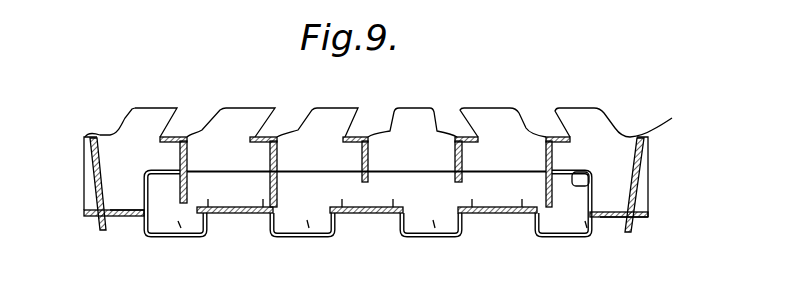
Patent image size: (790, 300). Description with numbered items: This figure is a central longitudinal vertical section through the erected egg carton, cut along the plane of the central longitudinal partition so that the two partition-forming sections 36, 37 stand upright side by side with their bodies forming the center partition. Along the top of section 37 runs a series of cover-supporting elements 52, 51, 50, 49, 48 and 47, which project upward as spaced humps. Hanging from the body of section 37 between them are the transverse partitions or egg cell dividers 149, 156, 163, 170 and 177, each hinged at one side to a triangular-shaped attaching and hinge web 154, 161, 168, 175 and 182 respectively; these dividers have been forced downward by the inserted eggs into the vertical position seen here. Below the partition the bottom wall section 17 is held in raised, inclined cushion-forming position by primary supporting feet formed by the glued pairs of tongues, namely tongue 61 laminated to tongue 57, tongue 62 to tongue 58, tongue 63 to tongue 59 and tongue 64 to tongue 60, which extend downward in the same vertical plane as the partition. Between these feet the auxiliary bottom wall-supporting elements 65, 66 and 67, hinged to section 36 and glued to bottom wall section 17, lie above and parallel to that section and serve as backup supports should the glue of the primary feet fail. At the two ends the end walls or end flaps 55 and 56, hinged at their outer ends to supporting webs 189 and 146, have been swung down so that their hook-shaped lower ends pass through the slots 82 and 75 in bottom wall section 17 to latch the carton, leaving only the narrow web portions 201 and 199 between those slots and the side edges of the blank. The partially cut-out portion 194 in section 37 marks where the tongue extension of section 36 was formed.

The bottom wall section 17 is at (246, 214).
The center partition-forming, transverse partition-forming and end flap-forming sect 36 is at (162, 183).
The center partition-forming, transverse partition-forming and end flap-forming sect 37 is at (113, 143).
The cover-supporting element 47 is at (578, 117).
The cover-supporting element 48 is at (490, 115).
The cover-supporting element 49 is at (413, 117).
The cover-supporting element 50 is at (333, 113).
The cover-supporting element 51 is at (248, 108).
The cover-supporting element 52 is at (147, 118).
The end wall or end flap 55 is at (648, 173).
The end wall or end flap 56 is at (93, 175).
The tongue or bottom wall-supporting element 57 is at (537, 237).
The tongue or bottom wall-supporting element 58 is at (402, 237).
The tongue or bottom wall-supporting element 59 is at (272, 237).
The tongue or bottom wall-supporting element 60 is at (146, 236).
The tongue or bottom wall-supporting element 61 is at (585, 228).
The tongue or bottom wall-supporting element 62 is at (434, 222).
The tongue or bottom wall-supporting element 63 is at (308, 222).
The tongue or bottom wall-supporting element 64 is at (180, 227).
The auxiliary bottom wall-supporting element 65 is at (495, 207).
The auxiliary bottom wall-supporting element 66 is at (372, 207).
The auxiliary bottom wall-supporting element 67 is at (235, 207).
The slot or opening 75 is at (117, 220).
The slot or opening 82 is at (618, 218).
The hinged supporting web 146 is at (85, 135).
The transverse partition or egg cell divider 149 is at (188, 160).
The triangular-shaped attaching and hinge web 154 is at (181, 137).
The transverse partition or egg cell divider 156 is at (278, 160).
The triangular-shaped attaching and hinge web 161 is at (272, 137).
The transverse partition or egg cell divider 163 is at (370, 160).
The triangular-shaped attaching and hinge web 168 is at (358, 137).
The transverse partition or egg cell divider 170 is at (463, 160).
The triangular-shaped attaching and hinge web 175 is at (457, 132).
The transverse partition or egg cell divider 177 is at (553, 163).
The triangular-shaped attaching and hinge web 182 is at (541, 137).
The hinged supporting web 189 is at (678, 112).
The partially cut-out portion 194 is at (586, 183).
The web portion 199 is at (92, 216).
The web portion 201 is at (638, 218).